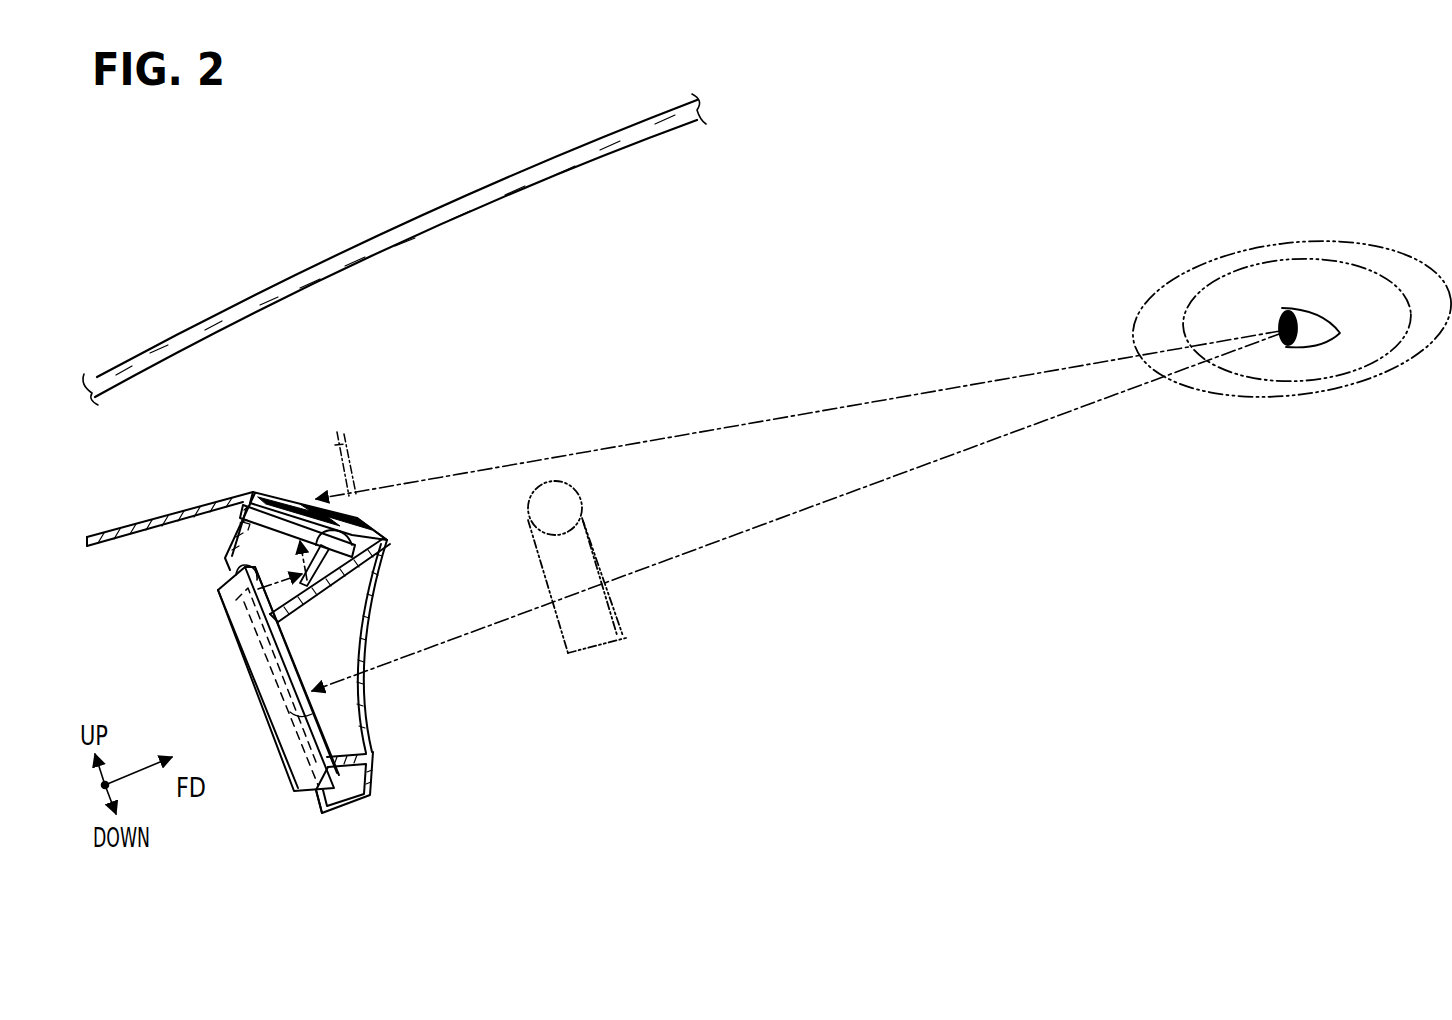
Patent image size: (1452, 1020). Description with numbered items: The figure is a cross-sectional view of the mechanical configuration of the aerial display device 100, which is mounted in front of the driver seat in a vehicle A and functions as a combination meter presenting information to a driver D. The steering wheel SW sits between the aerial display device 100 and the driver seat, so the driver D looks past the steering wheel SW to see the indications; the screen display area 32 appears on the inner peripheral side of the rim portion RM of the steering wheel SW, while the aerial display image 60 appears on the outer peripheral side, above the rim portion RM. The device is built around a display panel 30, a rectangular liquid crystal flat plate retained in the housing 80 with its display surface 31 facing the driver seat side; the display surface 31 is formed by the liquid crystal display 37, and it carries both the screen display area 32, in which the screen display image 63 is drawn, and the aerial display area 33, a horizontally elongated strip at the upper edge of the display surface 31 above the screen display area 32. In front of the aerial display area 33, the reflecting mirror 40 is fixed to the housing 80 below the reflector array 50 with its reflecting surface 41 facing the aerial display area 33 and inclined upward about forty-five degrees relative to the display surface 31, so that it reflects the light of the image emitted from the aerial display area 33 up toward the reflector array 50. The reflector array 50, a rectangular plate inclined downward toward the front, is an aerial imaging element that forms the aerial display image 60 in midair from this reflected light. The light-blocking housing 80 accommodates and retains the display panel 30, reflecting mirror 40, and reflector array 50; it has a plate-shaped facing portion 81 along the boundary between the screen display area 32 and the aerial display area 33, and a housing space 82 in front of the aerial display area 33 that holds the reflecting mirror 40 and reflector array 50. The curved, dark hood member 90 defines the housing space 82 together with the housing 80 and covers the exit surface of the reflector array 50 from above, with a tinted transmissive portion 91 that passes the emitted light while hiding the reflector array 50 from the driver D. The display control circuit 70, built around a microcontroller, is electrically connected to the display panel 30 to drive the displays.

The vehicle A is at (352, 212).
The driver D is at (1290, 297).
The rim portion RM is at (534, 488).
The steering wheel SW is at (615, 595).
The display panel 30 is at (297, 684).
The display surface 31 is at (322, 742).
The screen display area 32 is at (310, 718).
The aerial display area 33 is at (236, 578).
The liquid crystal display 37 is at (306, 712).
The reflecting mirror 40 is at (352, 578).
The reflecting surface 41 is at (388, 540).
The reflector array 50 is at (368, 551).
The aerial display image 60 is at (338, 432).
The screen display image 63 is at (294, 661).
The display control circuit 70 is at (232, 614).
The housing 80 is at (376, 778).
The facing portion 81 is at (262, 645).
The housing space 82 is at (262, 552).
The hood member 90 is at (235, 491).
The transmissive portion 91 is at (276, 497).
The aerial display device 100 is at (380, 816).